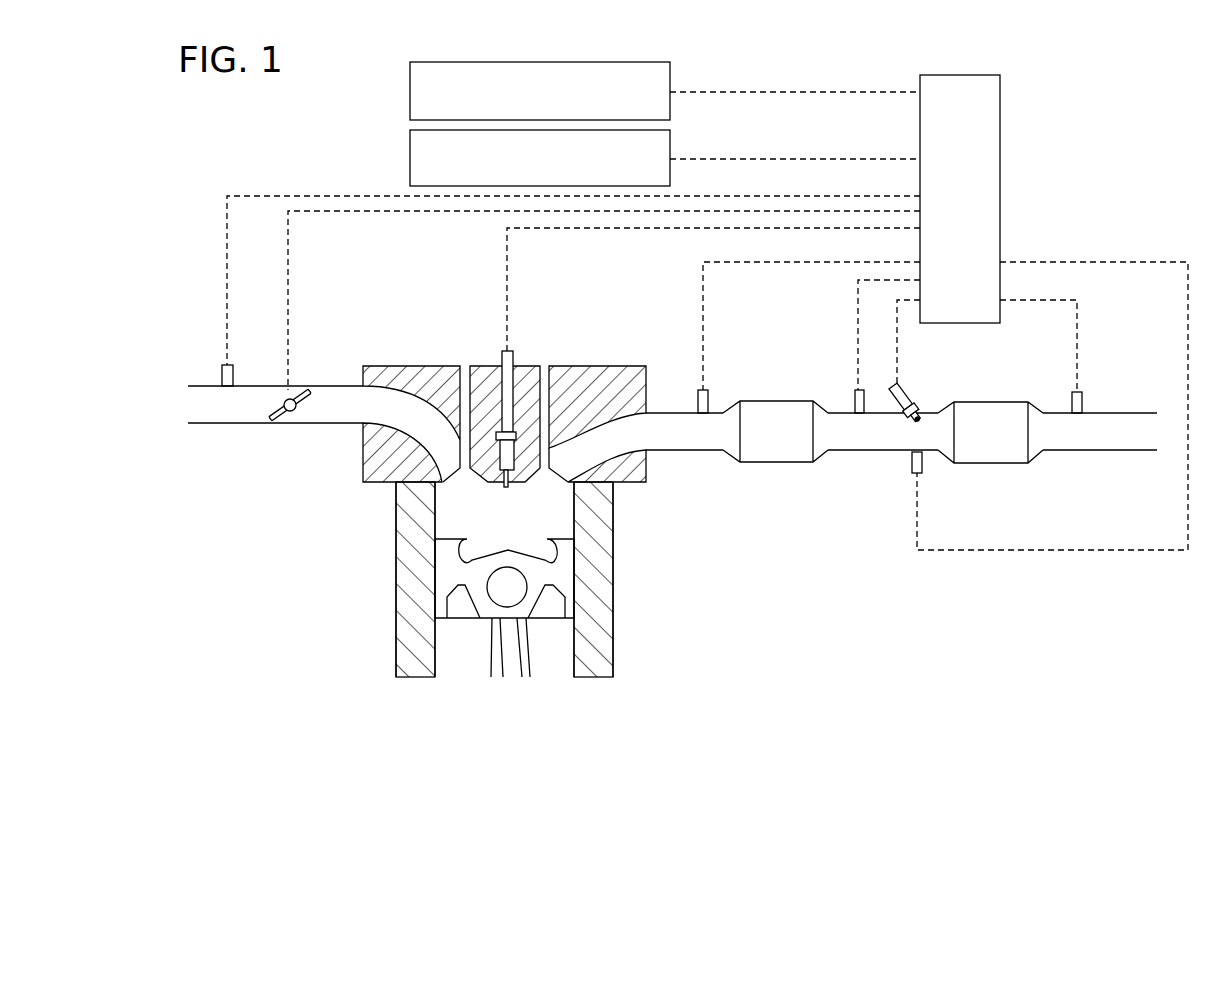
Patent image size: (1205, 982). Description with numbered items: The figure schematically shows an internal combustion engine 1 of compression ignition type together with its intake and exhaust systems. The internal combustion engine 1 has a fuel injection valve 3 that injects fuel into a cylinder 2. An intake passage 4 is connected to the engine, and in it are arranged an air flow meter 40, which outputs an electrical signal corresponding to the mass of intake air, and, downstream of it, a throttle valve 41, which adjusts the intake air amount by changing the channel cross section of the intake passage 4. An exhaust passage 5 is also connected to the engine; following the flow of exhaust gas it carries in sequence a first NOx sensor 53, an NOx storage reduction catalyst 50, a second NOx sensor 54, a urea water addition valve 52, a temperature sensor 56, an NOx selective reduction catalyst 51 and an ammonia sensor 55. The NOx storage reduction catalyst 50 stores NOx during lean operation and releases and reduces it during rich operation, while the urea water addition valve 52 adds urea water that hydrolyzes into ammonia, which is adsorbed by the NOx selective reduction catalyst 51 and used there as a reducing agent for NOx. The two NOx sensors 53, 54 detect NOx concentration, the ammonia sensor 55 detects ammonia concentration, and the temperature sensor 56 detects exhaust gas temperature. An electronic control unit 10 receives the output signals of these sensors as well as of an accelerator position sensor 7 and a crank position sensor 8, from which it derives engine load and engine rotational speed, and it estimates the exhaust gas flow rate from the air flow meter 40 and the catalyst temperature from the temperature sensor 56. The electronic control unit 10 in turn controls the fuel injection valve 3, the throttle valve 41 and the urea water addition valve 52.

The internal combustion engine 1 is at (376, 543).
The cylinder 2 is at (575, 500).
The fuel injection valve 3 is at (500, 362).
The intake passage 4 is at (241, 425).
The exhaust passage 5 is at (705, 453).
The accelerator position sensor 7 is at (410, 88).
The crank position sensor 8 is at (410, 153).
The electronic control unit (ECU) 10 is at (1000, 140).
The air flow meter 40 is at (222, 363).
The throttle valve 41 is at (292, 412).
The NOx storage reduction catalyst 50 is at (773, 464).
The NOx selective reduction catalyst 51 is at (990, 465).
The urea water addition valve 52 is at (906, 391).
The first NOx sensor 53 is at (710, 399).
The second NOx sensor 54 is at (852, 388).
The ammonia sensor 55 is at (1071, 390).
The temperature sensor 56 is at (925, 475).